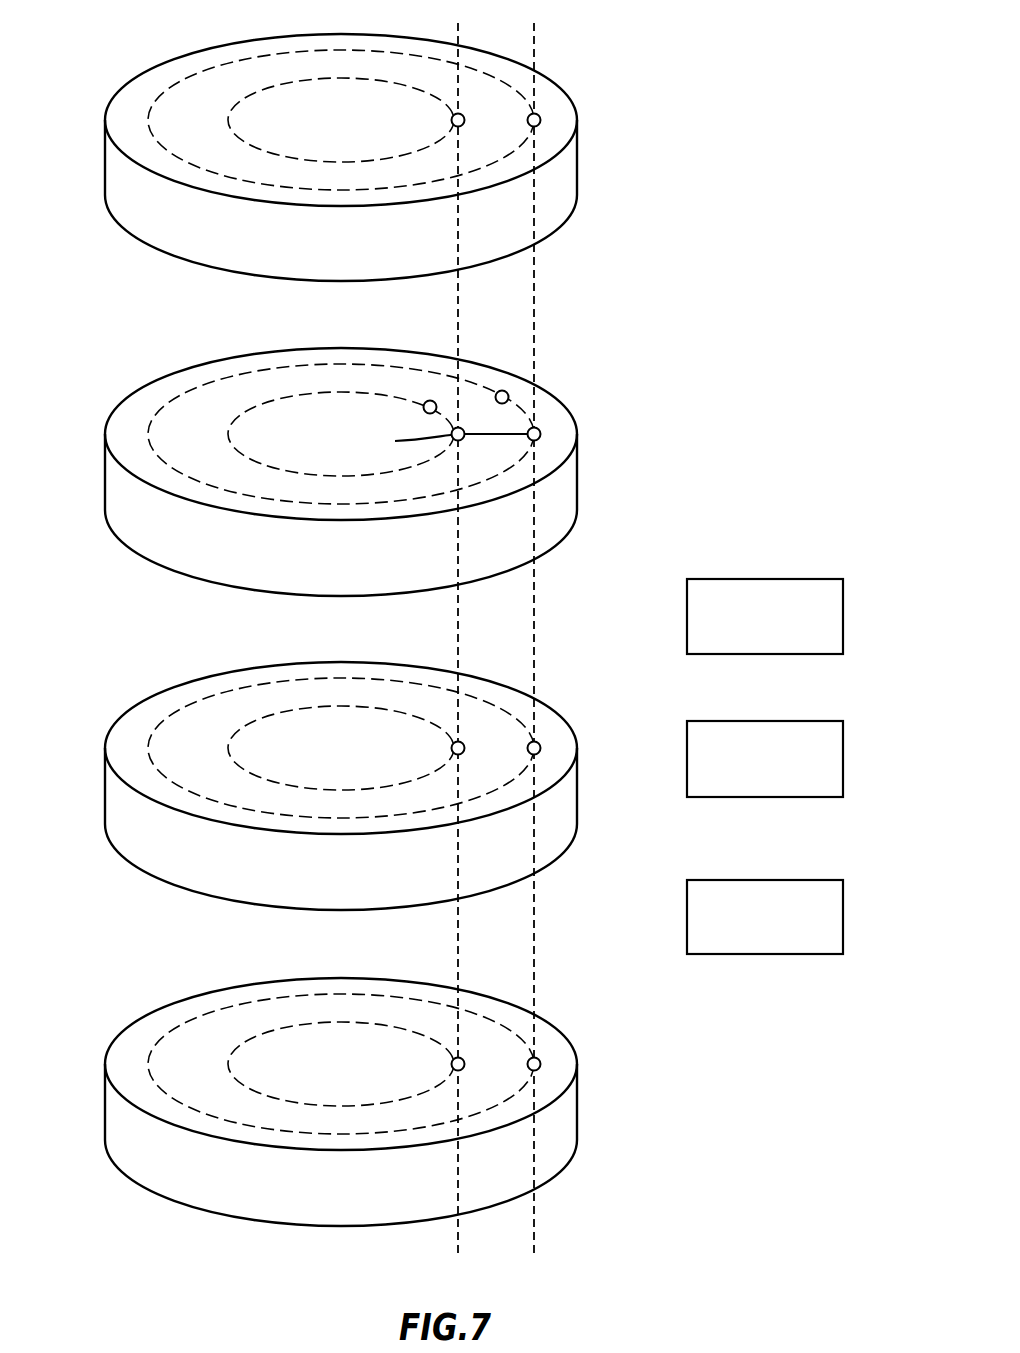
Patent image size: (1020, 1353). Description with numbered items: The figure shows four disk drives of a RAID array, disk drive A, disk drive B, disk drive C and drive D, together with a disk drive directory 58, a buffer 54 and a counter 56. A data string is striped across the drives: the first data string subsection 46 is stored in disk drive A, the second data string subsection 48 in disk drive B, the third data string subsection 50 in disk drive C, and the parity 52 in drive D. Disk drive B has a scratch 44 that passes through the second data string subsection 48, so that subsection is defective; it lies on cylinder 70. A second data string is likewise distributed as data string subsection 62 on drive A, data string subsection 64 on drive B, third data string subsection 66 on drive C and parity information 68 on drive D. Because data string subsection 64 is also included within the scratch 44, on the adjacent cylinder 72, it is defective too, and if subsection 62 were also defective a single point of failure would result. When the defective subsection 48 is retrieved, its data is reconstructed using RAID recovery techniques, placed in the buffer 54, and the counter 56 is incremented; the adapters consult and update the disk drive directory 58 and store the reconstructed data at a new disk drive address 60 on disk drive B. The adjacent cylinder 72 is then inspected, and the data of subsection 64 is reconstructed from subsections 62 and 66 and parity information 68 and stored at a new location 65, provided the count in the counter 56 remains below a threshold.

The scratch 44 is at (488, 443).
The first data string subsection 46 is at (546, 120).
The second data string subsection 48 is at (547, 434).
The third data string subsection 50 is at (548, 748).
The parity 52 is at (551, 1067).
The buffer 54 is at (798, 801).
The counter 56 is at (791, 959).
The disk drive directory 58 is at (786, 575).
The new disk drive address 60 is at (506, 387).
The data string subsection 62 is at (447, 118).
The data string subsection 64 is at (452, 441).
The new location 65 is at (425, 396).
The third data string subsection 66 is at (445, 753).
The parity information 68 is at (440, 1069).
The cylinder 70 is at (162, 405).
The cylinder 72 is at (257, 407).
The disk drive A is at (582, 86).
The disk drive B is at (364, 448).
The disk drive C is at (554, 694).
The parity drive D is at (575, 1022).